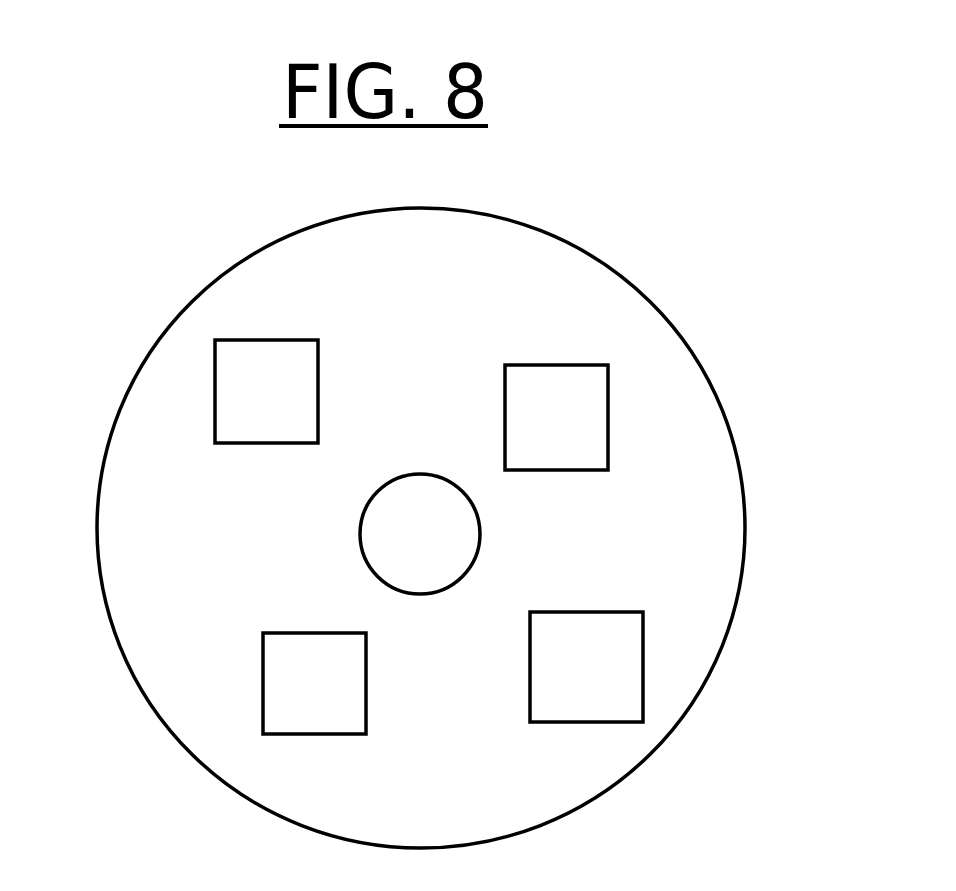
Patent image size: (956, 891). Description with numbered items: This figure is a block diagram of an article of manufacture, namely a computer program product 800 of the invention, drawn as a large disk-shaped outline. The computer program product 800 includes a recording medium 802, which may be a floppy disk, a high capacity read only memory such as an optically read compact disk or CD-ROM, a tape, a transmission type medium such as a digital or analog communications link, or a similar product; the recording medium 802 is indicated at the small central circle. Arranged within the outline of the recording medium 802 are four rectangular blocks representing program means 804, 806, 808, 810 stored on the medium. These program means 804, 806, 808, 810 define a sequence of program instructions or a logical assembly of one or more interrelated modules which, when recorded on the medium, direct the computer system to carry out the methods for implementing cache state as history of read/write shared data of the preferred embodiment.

The computer program product 800 is at (698, 318).
The recording medium 802 is at (152, 343).
The program means 804 is at (314, 683).
The program means 806 is at (556, 417).
The program means 808 is at (586, 667).
The program means 810 is at (266, 391).